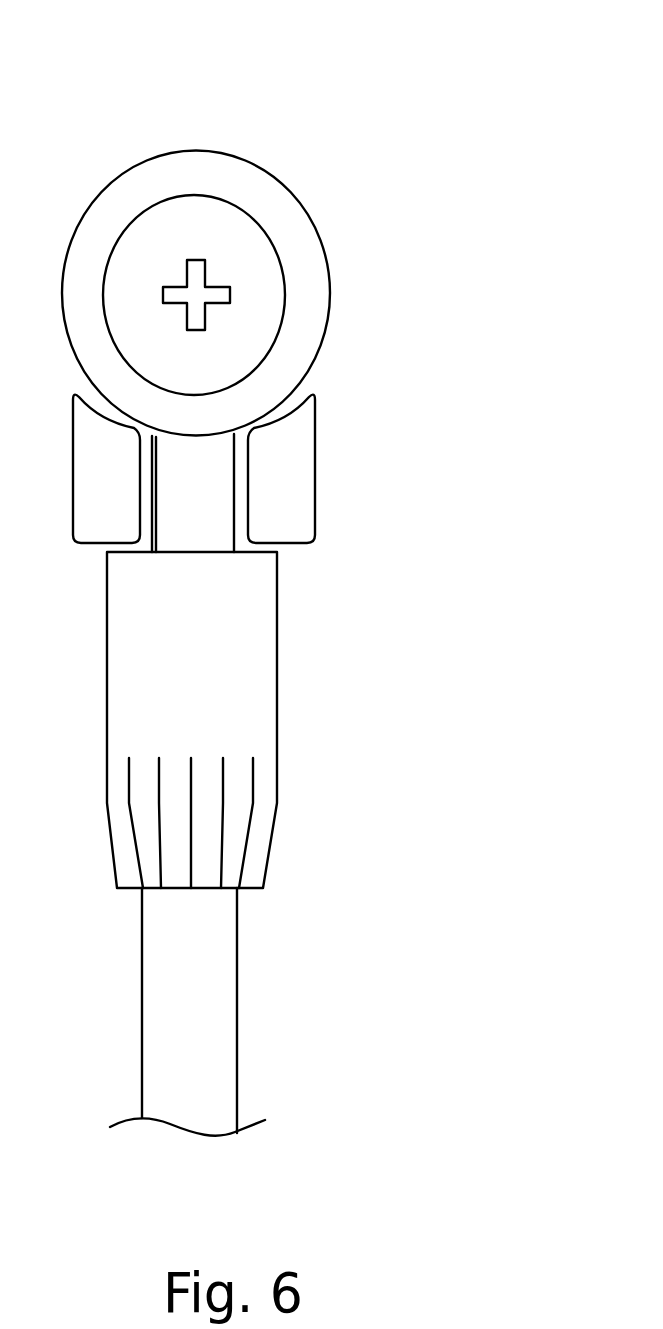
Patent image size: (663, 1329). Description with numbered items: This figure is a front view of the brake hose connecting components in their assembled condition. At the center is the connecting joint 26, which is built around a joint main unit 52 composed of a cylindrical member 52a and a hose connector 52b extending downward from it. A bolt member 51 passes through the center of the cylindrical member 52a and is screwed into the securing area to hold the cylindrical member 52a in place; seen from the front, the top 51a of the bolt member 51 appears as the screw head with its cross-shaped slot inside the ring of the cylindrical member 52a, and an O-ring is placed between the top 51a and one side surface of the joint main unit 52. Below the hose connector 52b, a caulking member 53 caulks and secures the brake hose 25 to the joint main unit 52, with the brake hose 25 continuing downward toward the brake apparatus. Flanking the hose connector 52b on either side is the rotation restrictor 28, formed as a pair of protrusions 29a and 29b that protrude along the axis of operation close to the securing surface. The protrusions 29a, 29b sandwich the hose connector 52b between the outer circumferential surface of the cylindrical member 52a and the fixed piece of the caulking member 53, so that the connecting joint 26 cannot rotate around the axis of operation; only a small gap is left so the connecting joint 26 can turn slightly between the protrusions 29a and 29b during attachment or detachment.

The connecting joint 26 is at (243, 152).
The joint main unit 52 is at (134, 191).
The cylindrical member 52a is at (108, 222).
The hose connector 52b is at (193, 520).
The bolt member 51 is at (264, 291).
The top of the bolt member 51a is at (240, 240).
The rotation restrictor 28 is at (462, 372).
The protrusion 29a is at (118, 472).
The protrusion 29b is at (288, 508).
The caulking member 53 is at (253, 708).
The brake hose 25 is at (210, 1035).